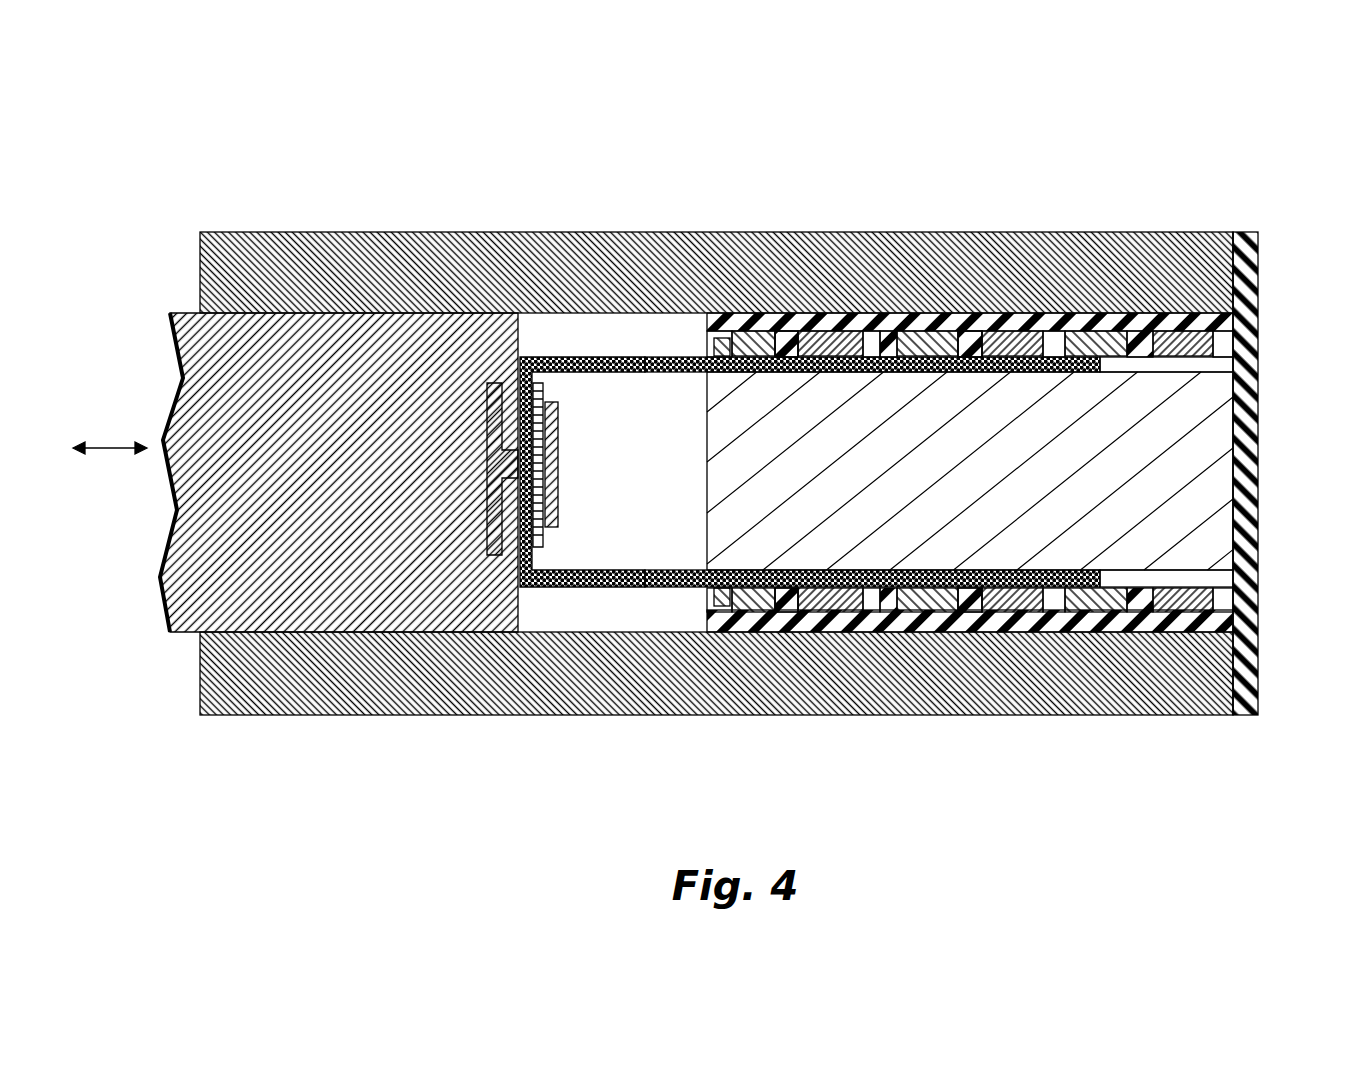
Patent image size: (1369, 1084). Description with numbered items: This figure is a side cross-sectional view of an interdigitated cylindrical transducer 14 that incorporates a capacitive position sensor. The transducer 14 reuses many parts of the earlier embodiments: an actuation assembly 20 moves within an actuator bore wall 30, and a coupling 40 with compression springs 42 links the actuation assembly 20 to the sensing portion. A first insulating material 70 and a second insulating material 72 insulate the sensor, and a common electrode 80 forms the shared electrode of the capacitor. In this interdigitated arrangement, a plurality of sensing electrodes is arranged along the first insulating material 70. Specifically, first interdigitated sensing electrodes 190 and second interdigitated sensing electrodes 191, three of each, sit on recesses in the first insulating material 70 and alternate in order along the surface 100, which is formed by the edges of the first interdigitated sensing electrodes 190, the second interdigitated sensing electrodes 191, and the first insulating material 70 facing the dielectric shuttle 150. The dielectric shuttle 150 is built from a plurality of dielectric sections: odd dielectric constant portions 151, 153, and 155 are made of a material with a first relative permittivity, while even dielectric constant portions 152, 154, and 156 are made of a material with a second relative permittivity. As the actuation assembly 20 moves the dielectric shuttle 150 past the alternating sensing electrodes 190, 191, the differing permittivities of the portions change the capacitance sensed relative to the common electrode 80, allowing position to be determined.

The transducer 14 is at (1212, 530).
The actuation assembly 20 is at (315, 355).
The actuator bore wall 30 is at (447, 253).
The coupling 40 is at (553, 400).
The compression springs 42 is at (540, 542).
The first insulating material 70 is at (1243, 330).
The second insulating material 72 is at (1243, 493).
The common electrode 80 is at (972, 480).
The surface 100 is at (702, 352).
The dielectric shuttle 150 is at (653, 560).
The odd dielectric constant portion 151 is at (601, 350).
The even dielectric constant portion 152 is at (725, 345).
The odd dielectric constant portion 153 is at (797, 345).
The even dielectric constant portion 154 is at (883, 345).
The odd dielectric constant portion 155 is at (980, 345).
The even dielectric constant portion 156 is at (1058, 345).
The first interdigitated sensing electrodes 190 is at (757, 340).
The second interdigitated sensing electrodes 191 is at (815, 338).